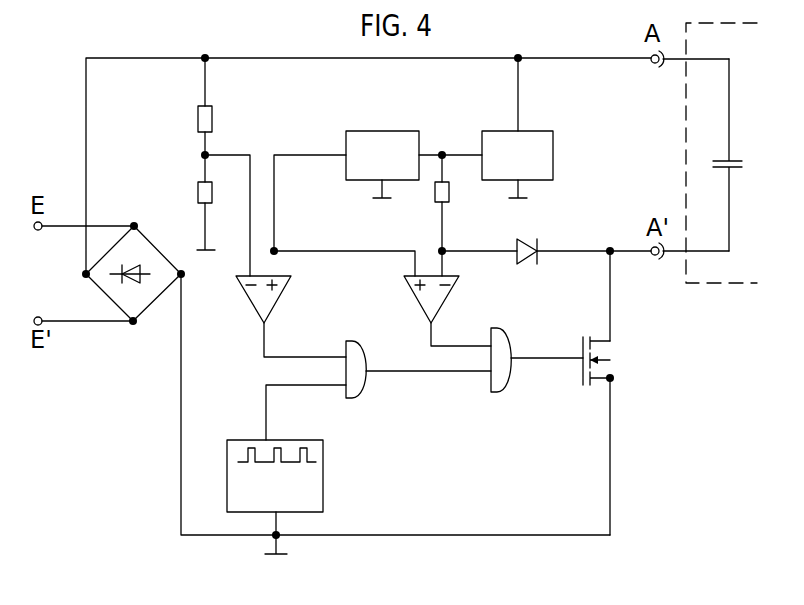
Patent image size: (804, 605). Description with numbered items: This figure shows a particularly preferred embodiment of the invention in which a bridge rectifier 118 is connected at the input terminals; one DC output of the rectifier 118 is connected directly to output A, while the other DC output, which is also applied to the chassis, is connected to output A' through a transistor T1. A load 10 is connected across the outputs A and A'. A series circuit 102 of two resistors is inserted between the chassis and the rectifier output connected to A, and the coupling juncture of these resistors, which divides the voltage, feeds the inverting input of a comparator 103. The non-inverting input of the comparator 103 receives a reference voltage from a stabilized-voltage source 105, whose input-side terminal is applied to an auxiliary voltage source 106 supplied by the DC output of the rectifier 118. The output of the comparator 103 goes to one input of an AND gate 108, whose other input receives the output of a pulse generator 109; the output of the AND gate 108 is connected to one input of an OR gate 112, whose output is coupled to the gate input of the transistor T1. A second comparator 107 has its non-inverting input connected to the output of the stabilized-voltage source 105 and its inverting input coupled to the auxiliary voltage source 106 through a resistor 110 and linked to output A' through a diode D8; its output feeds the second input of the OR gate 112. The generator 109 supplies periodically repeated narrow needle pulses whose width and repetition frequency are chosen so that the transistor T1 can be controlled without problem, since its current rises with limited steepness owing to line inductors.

The load / consumer connected at terminals A, A' 10 is at (733, 153).
The series circuit 102 is at (198, 190).
The comparator 103 is at (282, 278).
The stabilized-voltage source 105 is at (373, 135).
The auxiliary voltage source 106 is at (537, 135).
The comparator 107 is at (418, 300).
The AND gate 108 is at (366, 352).
The pulse generator 109 is at (323, 490).
The resistor 110 is at (450, 192).
The OR gate 112 is at (505, 390).
The bridge rectifier 118 is at (144, 243).
The diode D8 is at (527, 242).
The transistor T1 is at (605, 352).